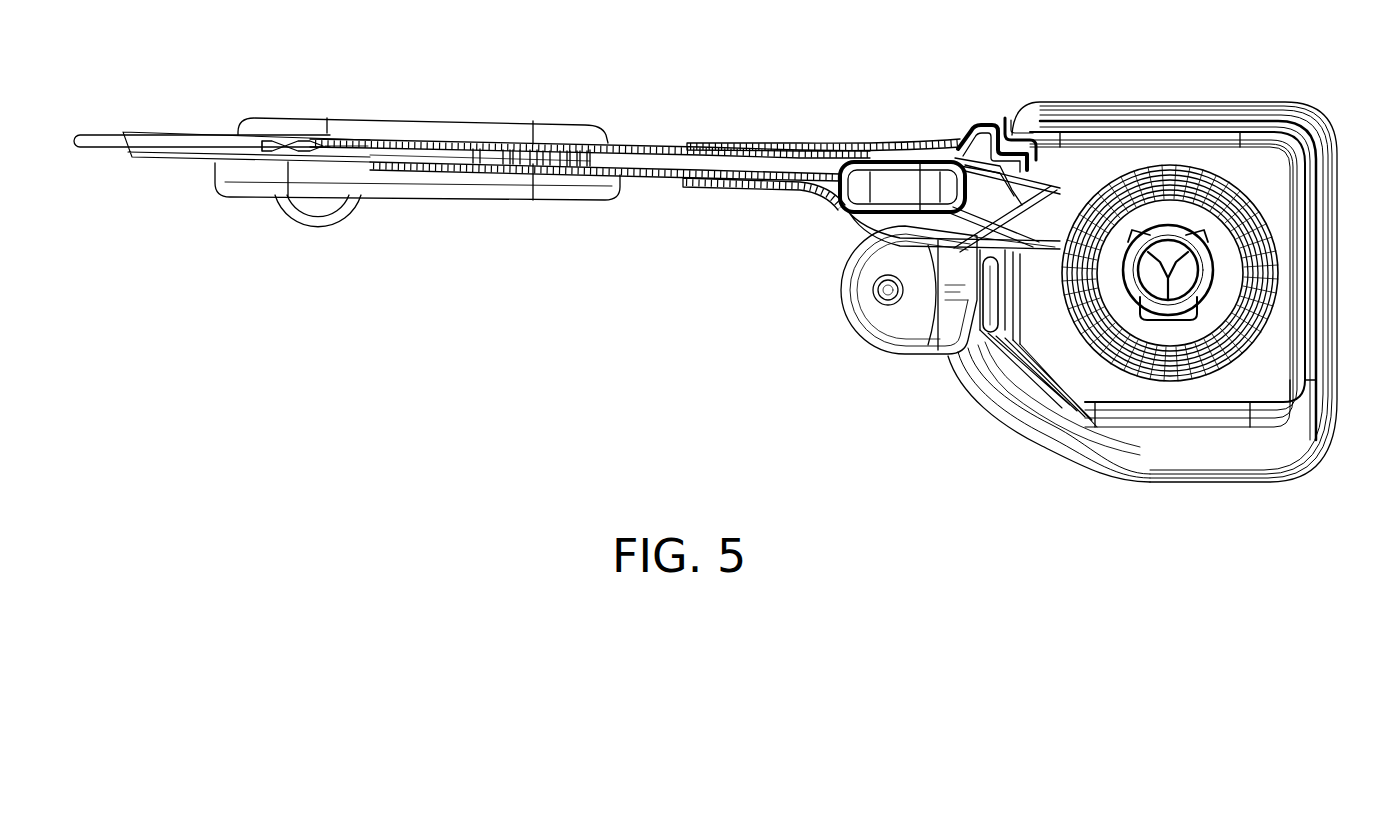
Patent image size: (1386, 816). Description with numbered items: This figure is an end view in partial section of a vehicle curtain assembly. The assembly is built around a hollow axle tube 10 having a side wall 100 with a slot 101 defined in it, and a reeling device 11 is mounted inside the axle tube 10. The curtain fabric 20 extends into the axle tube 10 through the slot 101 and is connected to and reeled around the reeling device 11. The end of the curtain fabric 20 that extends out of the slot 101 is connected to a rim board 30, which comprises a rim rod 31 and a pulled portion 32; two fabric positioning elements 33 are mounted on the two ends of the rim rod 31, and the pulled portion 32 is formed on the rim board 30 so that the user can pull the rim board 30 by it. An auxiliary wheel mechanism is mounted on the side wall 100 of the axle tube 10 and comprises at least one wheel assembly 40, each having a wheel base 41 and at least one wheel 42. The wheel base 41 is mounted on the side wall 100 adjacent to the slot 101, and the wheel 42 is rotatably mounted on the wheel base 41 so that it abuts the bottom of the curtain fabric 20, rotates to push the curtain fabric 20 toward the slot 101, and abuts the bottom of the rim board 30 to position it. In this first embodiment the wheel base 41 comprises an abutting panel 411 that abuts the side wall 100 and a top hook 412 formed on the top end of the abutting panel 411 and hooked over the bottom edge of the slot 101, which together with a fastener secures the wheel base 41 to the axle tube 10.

The axle tube 10 is at (1194, 95).
The reeling device 11 is at (1199, 226).
The curtain fabric 20 is at (1116, 158).
The rim board 30 is at (640, 140).
The rim rod 31 is at (847, 220).
The pulled portion 32 is at (285, 128).
The fabric positioning element 33 is at (967, 133).
The wheel assembly 40 is at (828, 347).
The wheel base 41 is at (933, 333).
The wheel 42 is at (830, 288).
The side wall 100 is at (1003, 362).
The slot 101 is at (1000, 125).
The abutting panel 411 is at (983, 300).
The top hook 412 is at (963, 157).